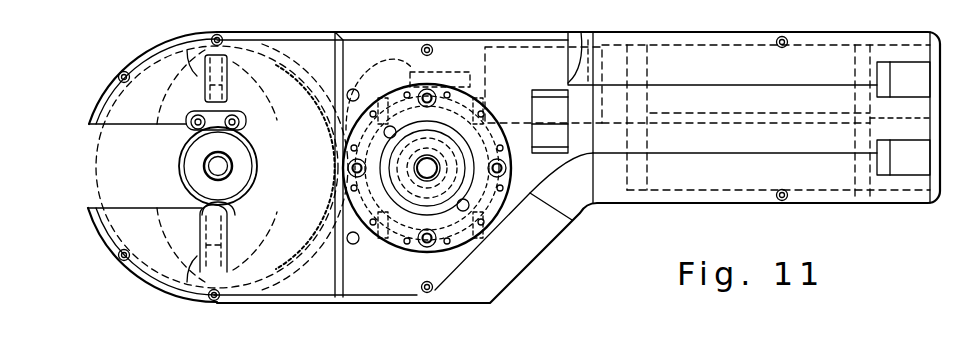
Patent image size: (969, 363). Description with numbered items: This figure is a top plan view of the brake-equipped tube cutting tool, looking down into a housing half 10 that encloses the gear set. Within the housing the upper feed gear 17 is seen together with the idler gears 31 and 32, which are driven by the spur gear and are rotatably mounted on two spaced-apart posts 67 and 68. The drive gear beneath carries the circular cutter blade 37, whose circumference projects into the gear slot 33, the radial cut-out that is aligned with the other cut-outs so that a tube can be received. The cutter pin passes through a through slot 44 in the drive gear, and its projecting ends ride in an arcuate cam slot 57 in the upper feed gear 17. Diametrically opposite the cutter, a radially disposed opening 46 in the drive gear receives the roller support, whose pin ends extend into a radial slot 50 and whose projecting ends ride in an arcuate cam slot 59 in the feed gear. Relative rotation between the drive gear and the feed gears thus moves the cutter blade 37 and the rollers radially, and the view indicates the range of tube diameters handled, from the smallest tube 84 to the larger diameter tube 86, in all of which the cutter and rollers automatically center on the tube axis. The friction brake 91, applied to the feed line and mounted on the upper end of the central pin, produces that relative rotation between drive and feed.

The housing half 10 is at (553, 230).
The upper feed gear 17 is at (167, 292).
The idler gear 31 is at (386, 253).
The idler gear 32 is at (370, 60).
The gear slot 33 is at (123, 126).
The cutter blade 37 is at (195, 222).
The through slot 44 is at (173, 265).
The radially disposed opening 46 is at (226, 89).
The radial slot 50 is at (248, 108).
The arcuate cam slot 57 is at (258, 257).
The arcuate cam slot 59 is at (152, 76).
The post 67 is at (358, 243).
The post 68 is at (352, 90).
The smallest tube 84 is at (203, 170).
The larger diameter tube 86 is at (255, 179).
The friction brake 91 is at (489, 229).